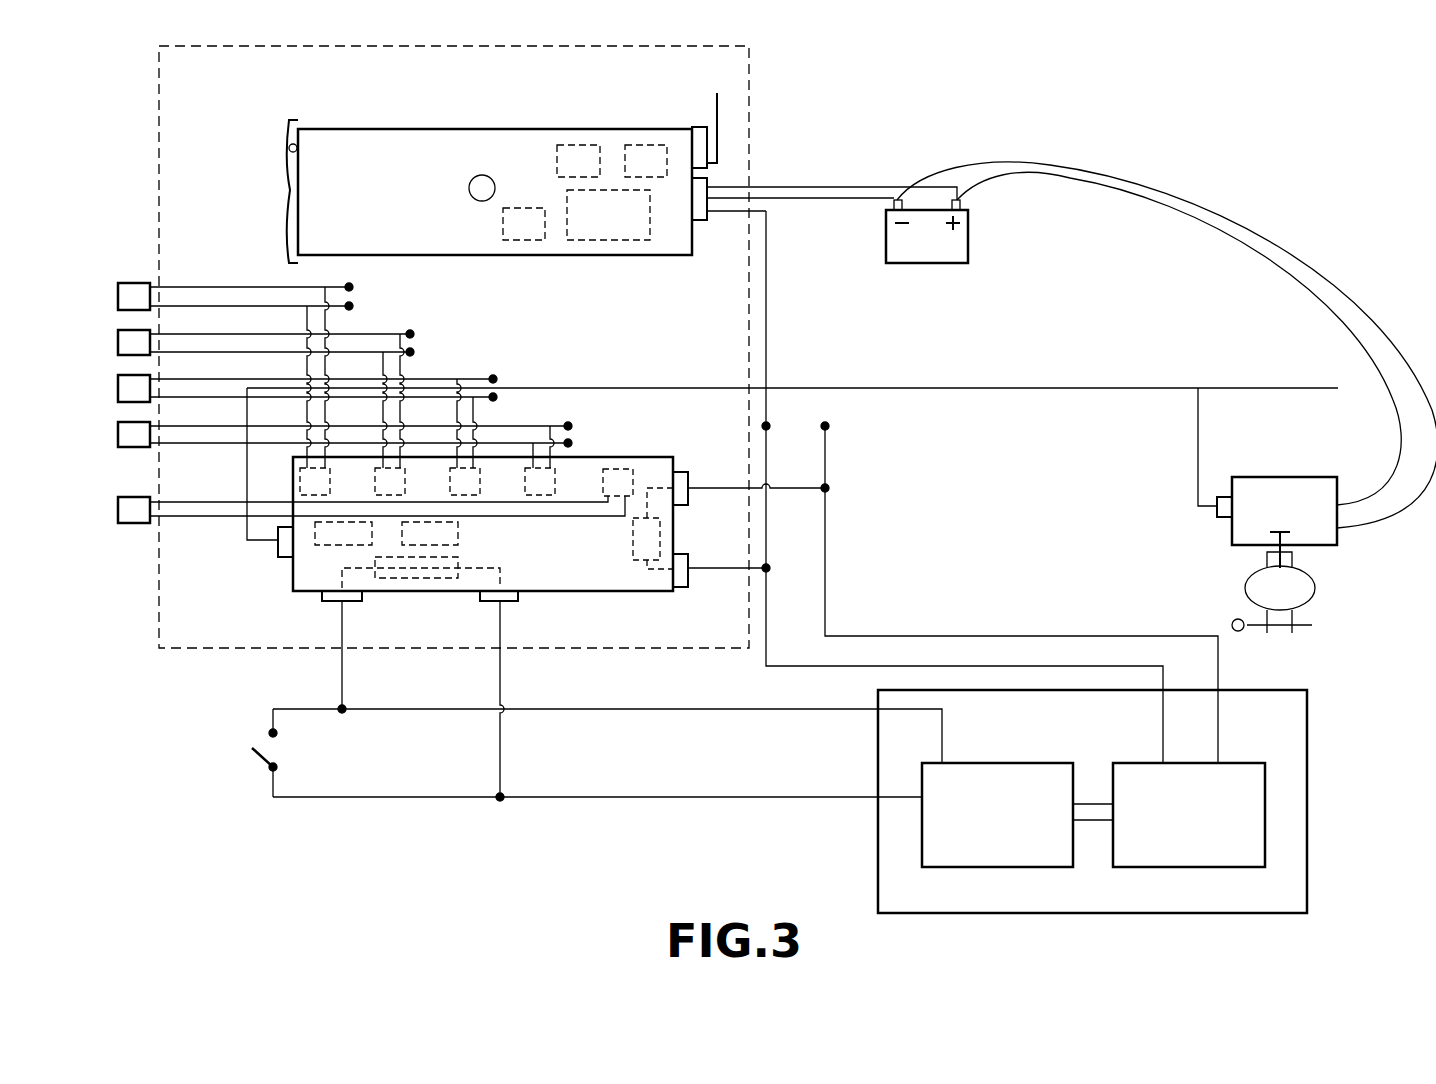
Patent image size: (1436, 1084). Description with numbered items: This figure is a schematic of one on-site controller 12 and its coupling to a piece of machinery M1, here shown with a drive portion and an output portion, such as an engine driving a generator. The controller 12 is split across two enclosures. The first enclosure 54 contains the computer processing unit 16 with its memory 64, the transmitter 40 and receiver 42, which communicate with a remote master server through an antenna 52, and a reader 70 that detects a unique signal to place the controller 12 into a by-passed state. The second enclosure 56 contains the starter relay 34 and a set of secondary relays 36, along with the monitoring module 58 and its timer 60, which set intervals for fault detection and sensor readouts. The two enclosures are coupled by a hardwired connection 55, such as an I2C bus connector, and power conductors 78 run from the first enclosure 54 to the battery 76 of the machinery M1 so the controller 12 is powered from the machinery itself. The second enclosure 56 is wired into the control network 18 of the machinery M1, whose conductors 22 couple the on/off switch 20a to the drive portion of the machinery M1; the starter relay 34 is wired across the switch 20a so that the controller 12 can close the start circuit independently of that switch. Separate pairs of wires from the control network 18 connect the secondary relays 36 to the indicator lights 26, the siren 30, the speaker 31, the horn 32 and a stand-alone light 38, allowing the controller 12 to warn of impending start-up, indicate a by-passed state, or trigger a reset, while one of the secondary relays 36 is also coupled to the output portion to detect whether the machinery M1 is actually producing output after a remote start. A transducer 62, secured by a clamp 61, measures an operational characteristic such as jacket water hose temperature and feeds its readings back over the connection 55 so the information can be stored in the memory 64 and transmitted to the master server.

The controller 12 is at (608, 650).
The computer processing unit 16 is at (627, 241).
The control network 18 is at (175, 285).
The on/off switch 20a is at (258, 760).
The conductors 22 is at (578, 710).
The indicator lights 26 is at (118, 292).
The siren 30 is at (118, 337).
The speaker 31 is at (118, 384).
The horn 32 is at (118, 429).
The starter relay 34 is at (428, 580).
The secondary relays 36 is at (300, 482).
The stand-alone light 38 is at (118, 505).
The transmitter 40 is at (576, 143).
The receiver 42 is at (644, 143).
The antenna 52 is at (718, 113).
The first enclosure 54 is at (428, 256).
The hardwired connection 55 is at (560, 388).
The second enclosure 56 is at (293, 572).
The module 58 is at (328, 545).
The timer 60 is at (458, 533).
The clamp 61 is at (1315, 588).
The transducer 62 is at (1267, 477).
The memory 64 is at (527, 241).
The reader 70 is at (478, 176).
The battery 76 is at (945, 263).
The power conductors 78 is at (847, 187).
The machinery M1 is at (1307, 853).